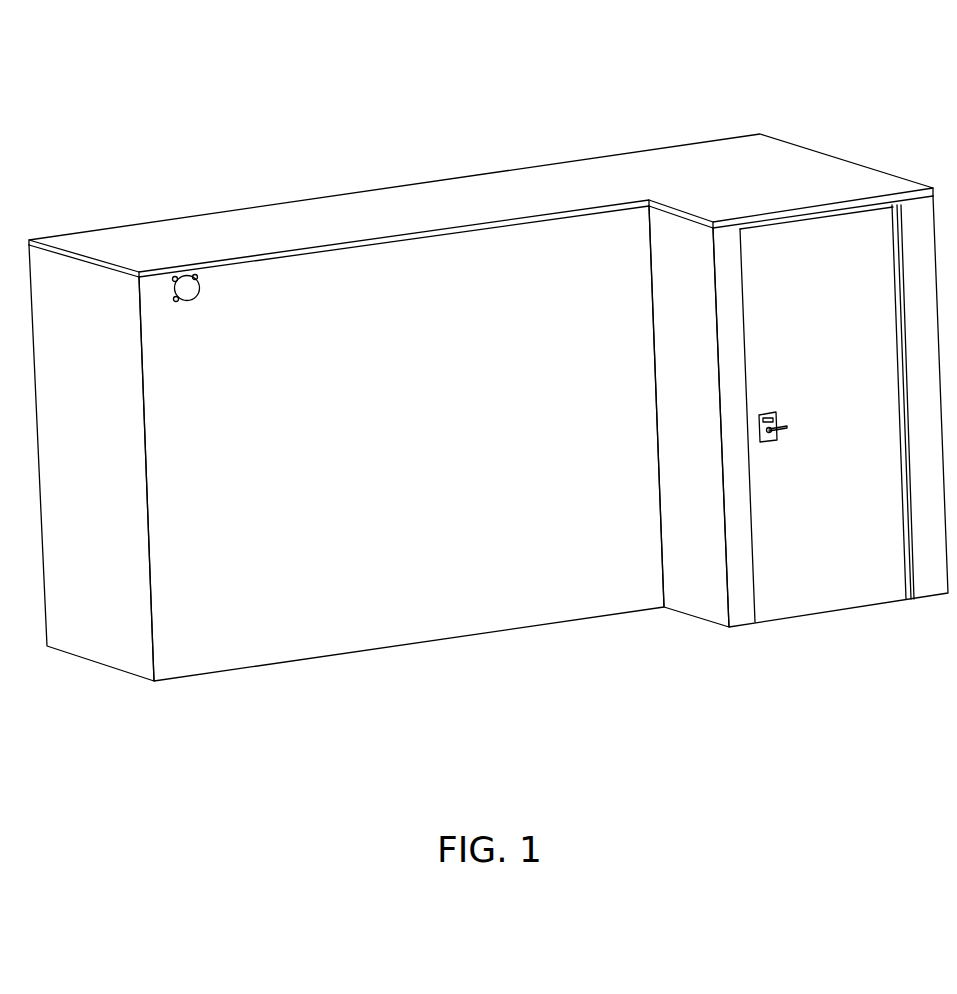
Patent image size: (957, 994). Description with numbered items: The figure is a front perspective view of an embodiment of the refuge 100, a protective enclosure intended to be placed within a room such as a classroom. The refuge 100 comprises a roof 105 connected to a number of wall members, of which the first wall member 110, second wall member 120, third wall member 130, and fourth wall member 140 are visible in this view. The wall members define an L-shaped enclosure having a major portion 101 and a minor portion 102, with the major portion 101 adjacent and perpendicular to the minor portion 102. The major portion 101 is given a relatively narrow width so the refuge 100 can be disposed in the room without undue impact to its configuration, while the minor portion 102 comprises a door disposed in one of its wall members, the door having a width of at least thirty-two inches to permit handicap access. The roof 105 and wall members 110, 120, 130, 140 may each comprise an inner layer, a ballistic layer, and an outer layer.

The refuge 100 is at (488, 388).
The major portion 101 is at (346, 442).
The minor portion 102 is at (783, 388).
The roof 105 is at (510, 171).
The first wall member 110 is at (740, 629).
The second wall member 120 is at (693, 617).
The third wall member 130 is at (507, 630).
The fourth wall member 140 is at (125, 673).